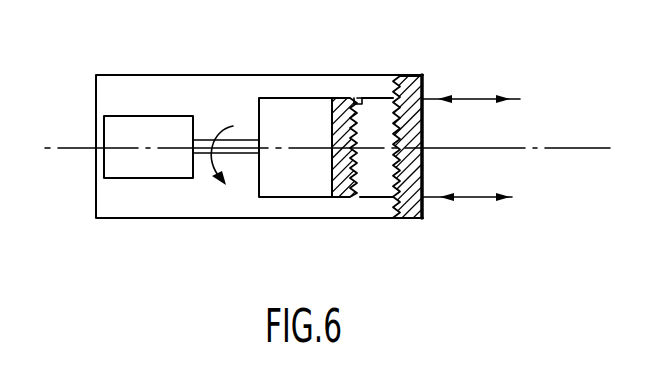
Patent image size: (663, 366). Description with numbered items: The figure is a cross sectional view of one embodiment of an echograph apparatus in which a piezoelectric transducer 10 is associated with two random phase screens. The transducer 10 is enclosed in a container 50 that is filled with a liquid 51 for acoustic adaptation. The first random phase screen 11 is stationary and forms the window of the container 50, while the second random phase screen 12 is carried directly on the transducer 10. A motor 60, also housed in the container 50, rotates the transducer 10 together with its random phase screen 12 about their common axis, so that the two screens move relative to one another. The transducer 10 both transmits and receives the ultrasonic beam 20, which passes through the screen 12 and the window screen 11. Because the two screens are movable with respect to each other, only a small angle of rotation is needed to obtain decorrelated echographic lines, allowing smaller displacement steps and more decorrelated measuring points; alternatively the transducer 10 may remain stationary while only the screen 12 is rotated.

The piezoelectric transducer 10 is at (300, 108).
The first random phase screen 11 is at (427, 117).
The second random phase screen 12 is at (362, 102).
The ultrasonic beam 20 is at (457, 173).
The container 50 is at (178, 219).
The liquid 51 is at (262, 80).
The motor 60 is at (118, 161).